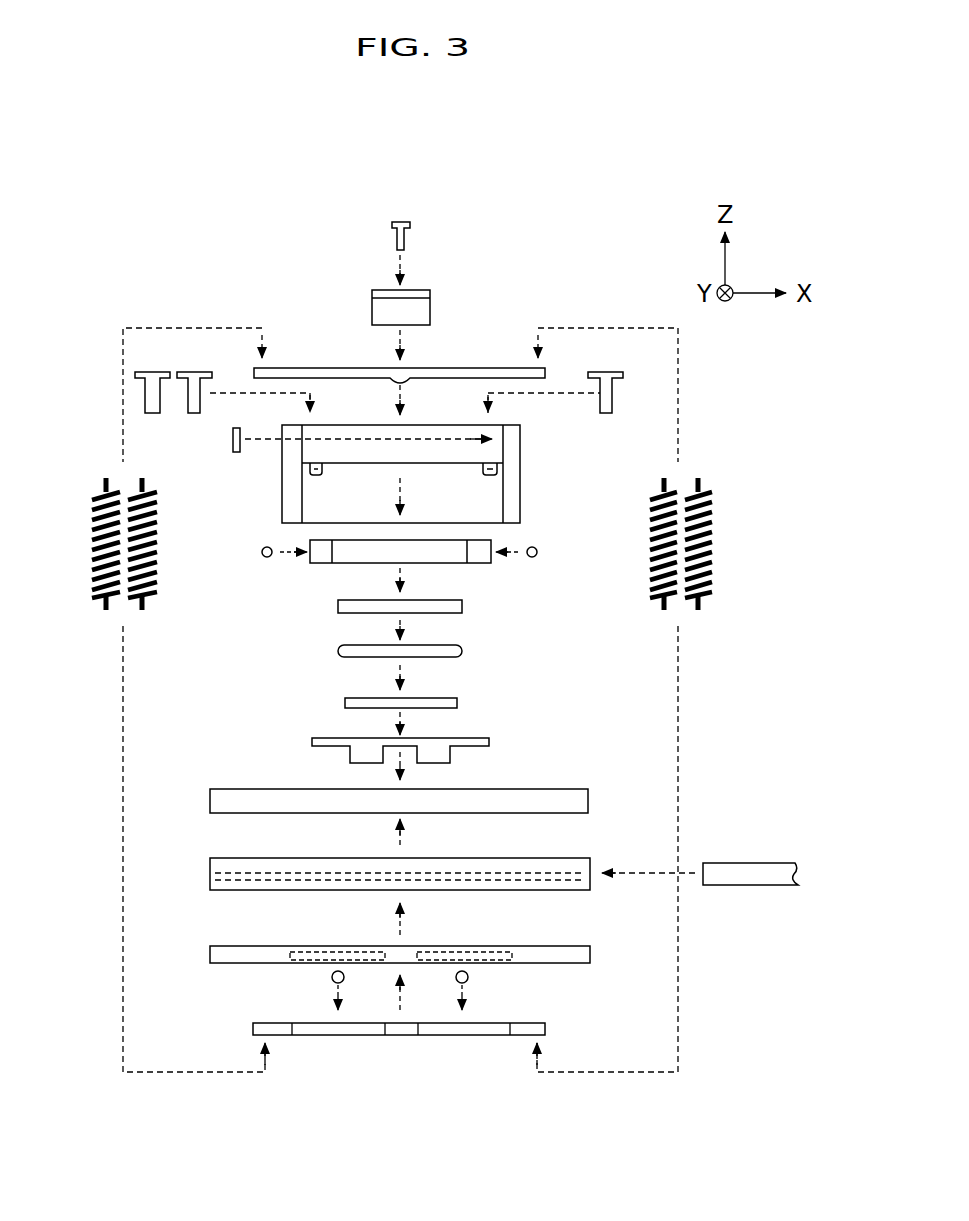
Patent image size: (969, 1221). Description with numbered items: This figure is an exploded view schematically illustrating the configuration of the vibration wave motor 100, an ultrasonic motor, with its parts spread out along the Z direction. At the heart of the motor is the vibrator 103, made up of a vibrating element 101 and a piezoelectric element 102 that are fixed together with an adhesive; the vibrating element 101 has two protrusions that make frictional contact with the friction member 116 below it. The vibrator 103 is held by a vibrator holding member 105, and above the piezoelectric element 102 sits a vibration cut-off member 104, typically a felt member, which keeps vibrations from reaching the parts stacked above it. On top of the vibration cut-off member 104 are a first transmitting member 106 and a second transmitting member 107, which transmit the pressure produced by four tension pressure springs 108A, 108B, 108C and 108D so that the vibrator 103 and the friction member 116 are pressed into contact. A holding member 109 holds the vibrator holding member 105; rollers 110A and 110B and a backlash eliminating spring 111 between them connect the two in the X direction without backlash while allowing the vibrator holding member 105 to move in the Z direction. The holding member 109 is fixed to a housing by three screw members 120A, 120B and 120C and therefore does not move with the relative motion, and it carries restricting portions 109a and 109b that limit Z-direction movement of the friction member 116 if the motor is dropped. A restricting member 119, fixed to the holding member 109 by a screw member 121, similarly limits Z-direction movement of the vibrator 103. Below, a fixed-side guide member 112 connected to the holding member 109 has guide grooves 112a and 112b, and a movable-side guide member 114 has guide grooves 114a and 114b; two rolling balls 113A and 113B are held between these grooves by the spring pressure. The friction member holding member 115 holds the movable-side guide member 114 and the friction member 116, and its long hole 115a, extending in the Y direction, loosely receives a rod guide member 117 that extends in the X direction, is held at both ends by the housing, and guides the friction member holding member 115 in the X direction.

The vibration wave motor 100 is at (170, 232).
The vibrating element 101 is at (489, 741).
The piezoelectric element 102 is at (457, 701).
The vibrator 103 is at (600, 694).
The vibration cut-off member 104 is at (462, 649).
The vibrator holding member 105 is at (322, 557).
The first transmitting member 106 is at (462, 606).
The second transmitting member 107 is at (501, 368).
The pressure spring 108A is at (160, 518).
The pressure spring 108B is at (648, 518).
The pressure spring 108C is at (90, 552).
The pressure spring 108D is at (714, 530).
The holding member 109 is at (522, 445).
The restricting portion 109a is at (318, 478).
The restricting portion 109b is at (490, 478).
The roller 110A is at (262, 552).
The roller 110B is at (538, 552).
The backlash eliminating spring 111 is at (231, 440).
The fixed-side guide member 112 is at (454, 1055).
The guide groove 112a is at (338, 1040).
The guide groove 112b is at (462, 1040).
The rolling ball 113A is at (331, 977).
The rolling ball 113B is at (468, 977).
The movable-side guide member 114 is at (432, 939).
The guide groove 114a is at (336, 950).
The guide groove 114b is at (460, 950).
The friction member holding member 115 is at (396, 860).
The long hole 115a is at (213, 877).
The friction member 116 is at (588, 797).
The guide member 117 is at (756, 872).
The restricting member 119 is at (415, 310).
The screw member 120A is at (152, 373).
The screw member 120B is at (198, 373).
The screw member 120C is at (608, 373).
The screw member 121 is at (410, 236).